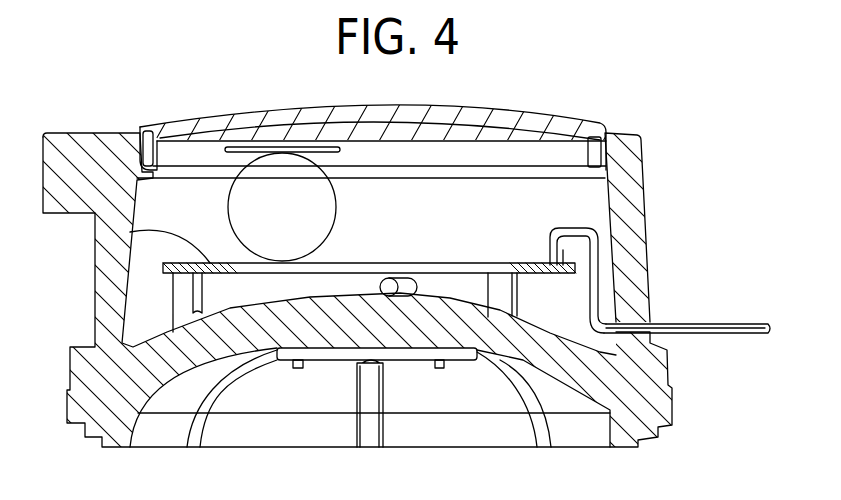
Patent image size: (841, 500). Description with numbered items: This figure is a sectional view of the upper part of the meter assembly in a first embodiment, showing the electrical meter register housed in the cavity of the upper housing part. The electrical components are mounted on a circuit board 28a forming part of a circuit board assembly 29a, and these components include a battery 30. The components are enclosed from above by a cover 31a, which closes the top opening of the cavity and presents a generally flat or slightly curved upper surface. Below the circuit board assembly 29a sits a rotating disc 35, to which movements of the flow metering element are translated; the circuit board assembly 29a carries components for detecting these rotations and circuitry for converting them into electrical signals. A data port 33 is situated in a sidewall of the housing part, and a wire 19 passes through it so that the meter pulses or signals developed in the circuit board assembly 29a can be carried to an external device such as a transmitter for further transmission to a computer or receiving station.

The wire 19 is at (712, 334).
The circuit board 28a is at (130, 232).
The circuit board assembly 29a is at (537, 229).
The battery 30 is at (338, 216).
The cover 31a is at (534, 114).
The data port 33 is at (643, 323).
The rotating disc 35 is at (402, 365).